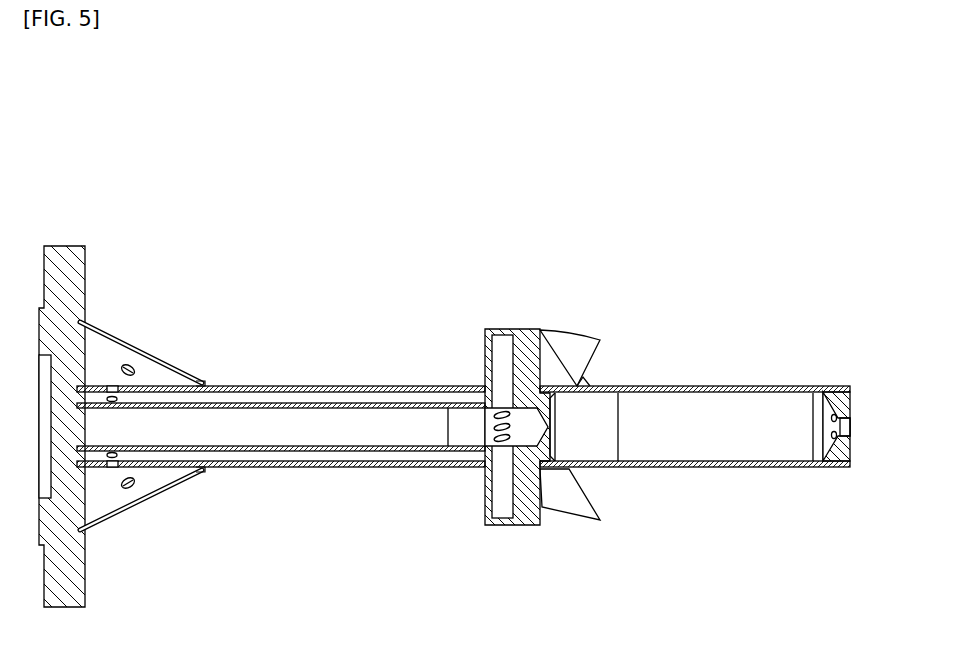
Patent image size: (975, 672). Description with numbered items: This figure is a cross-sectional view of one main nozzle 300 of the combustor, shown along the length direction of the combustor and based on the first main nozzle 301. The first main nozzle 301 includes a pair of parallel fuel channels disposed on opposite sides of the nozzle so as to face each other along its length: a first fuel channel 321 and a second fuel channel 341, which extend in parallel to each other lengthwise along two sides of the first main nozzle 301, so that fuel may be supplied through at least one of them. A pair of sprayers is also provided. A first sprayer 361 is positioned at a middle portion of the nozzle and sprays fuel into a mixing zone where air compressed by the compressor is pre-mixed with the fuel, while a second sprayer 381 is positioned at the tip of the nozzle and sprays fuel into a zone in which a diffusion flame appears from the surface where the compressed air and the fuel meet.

The main nozzle 300 is at (72, 163).
The first main nozzle 301 is at (700, 296).
The first fuel channel 321 is at (329, 400).
The second fuel channel 341 is at (329, 457).
The first sprayer 361 is at (500, 343).
The second sprayer 381 is at (850, 427).